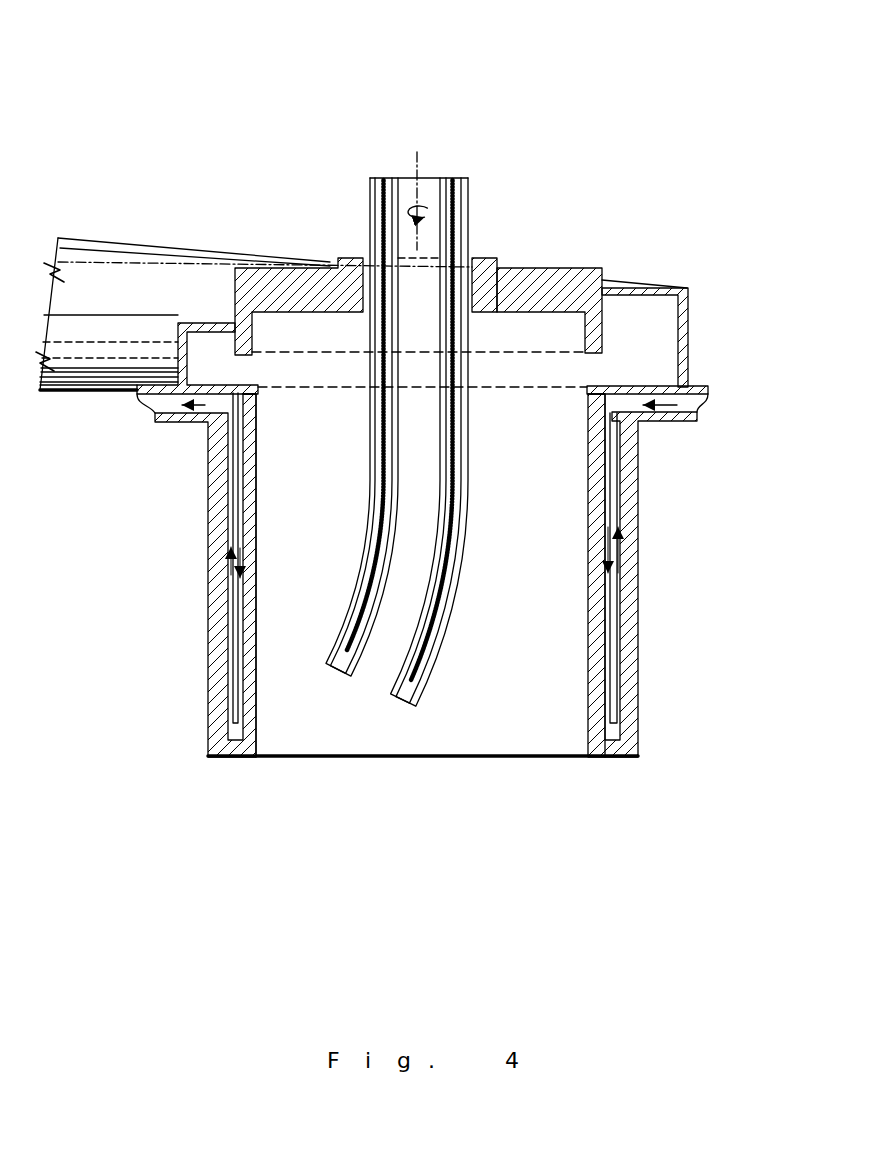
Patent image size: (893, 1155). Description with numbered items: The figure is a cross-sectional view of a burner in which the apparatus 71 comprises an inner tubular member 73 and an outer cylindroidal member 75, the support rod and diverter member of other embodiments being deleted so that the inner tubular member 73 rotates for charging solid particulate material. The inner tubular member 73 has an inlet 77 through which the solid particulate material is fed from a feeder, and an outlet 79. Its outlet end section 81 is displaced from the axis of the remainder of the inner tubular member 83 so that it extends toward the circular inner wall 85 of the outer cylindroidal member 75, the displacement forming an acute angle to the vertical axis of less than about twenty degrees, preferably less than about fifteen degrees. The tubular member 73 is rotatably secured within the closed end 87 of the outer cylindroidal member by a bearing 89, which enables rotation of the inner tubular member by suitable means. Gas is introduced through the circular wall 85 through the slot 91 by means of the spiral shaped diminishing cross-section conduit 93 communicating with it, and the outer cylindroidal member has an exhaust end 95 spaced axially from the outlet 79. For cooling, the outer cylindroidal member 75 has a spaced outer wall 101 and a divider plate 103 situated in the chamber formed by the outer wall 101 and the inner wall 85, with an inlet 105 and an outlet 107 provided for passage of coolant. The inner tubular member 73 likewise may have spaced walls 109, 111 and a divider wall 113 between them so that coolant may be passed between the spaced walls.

The apparatus 71 is at (400, 647).
The inner tubular member 73 is at (472, 445).
The outer cylindroidal member 75 is at (578, 528).
The inlet 77 is at (413, 364).
The outlet 79 is at (368, 698).
The outlet end section 81 is at (442, 653).
The remainder of the inner tubular member 83 is at (472, 412).
The circular inner wall 85 is at (258, 568).
The closed end 87 is at (306, 280).
The bearing 89 is at (485, 275).
The slot 91 is at (320, 377).
The spiral shaped diminishing cross-section conduit 93 is at (178, 340).
The exhaust end 95 is at (285, 765).
The outer wall 101 is at (208, 545).
The divider plate 103 is at (237, 675).
The inlet 105 is at (632, 405).
The outlet 107 is at (218, 405).
The spaced wall 109 is at (359, 427).
The spaced wall 111 is at (403, 520).
The divider wall 113 is at (358, 618).